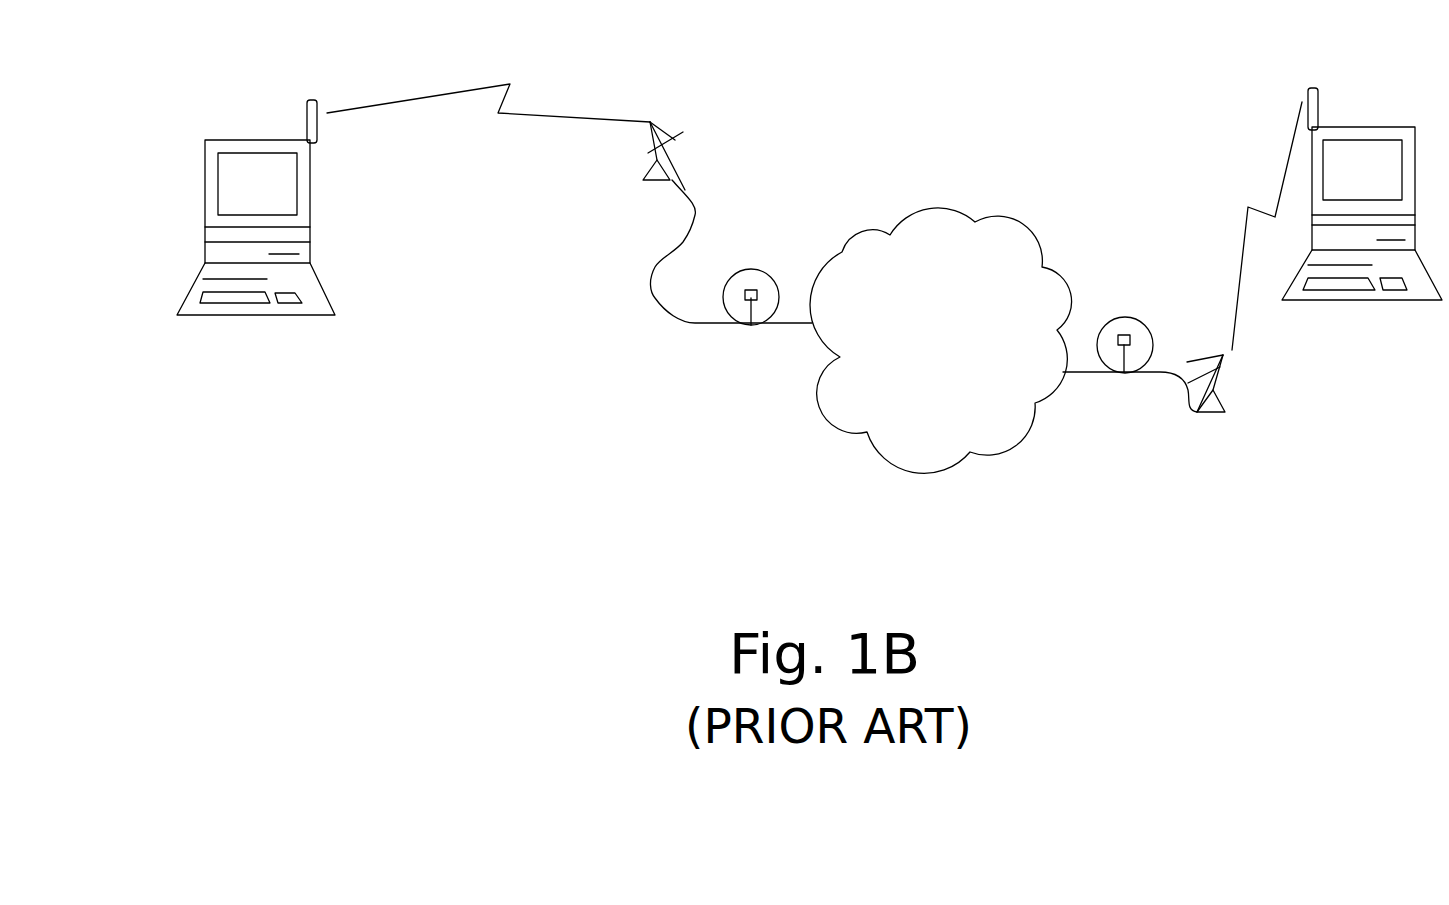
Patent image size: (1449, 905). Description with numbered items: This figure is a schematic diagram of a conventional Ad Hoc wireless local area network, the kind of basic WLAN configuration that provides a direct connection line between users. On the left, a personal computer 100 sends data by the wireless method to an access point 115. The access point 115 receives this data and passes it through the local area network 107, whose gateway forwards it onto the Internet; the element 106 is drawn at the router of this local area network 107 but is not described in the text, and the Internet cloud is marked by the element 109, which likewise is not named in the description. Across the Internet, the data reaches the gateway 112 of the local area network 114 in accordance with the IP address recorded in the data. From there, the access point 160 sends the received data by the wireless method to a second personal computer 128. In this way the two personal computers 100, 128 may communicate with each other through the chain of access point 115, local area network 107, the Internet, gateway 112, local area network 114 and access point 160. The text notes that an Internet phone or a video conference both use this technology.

The personal computer 100 is at (205, 227).
The access point 115 is at (667, 165).
The local area network 107 is at (750, 270).
The network interface 106 is at (760, 290).
The Internet 109 is at (940, 210).
The local area network 114 is at (1123, 317).
The gateway 112 is at (1130, 340).
The access point 160 is at (1207, 415).
The personal computer 128 is at (1403, 127).